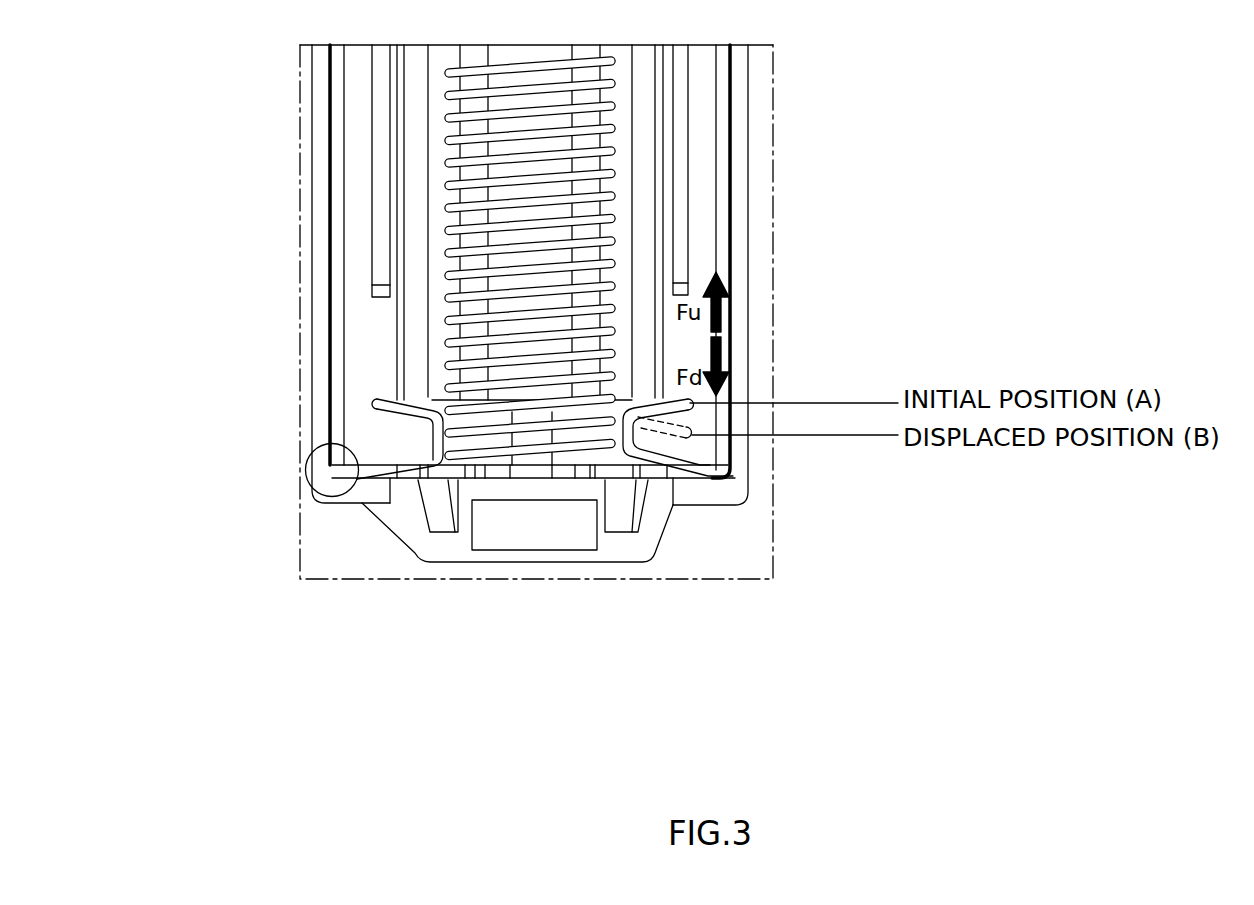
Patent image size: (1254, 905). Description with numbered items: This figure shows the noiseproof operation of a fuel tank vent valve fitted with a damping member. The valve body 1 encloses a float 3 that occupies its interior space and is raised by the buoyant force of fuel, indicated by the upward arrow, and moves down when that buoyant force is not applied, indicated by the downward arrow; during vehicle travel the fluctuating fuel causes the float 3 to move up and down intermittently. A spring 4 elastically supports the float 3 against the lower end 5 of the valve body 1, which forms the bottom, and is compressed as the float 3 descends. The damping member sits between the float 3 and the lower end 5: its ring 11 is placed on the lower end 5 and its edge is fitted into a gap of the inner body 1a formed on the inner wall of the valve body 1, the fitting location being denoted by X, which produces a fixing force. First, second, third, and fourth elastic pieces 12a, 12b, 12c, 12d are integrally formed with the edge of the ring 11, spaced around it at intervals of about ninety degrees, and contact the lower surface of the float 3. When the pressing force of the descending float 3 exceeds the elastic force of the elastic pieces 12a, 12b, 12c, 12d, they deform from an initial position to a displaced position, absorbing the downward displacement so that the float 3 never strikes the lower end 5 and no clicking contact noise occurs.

The valve body 1 is at (323, 258).
The inner body 1a is at (340, 342).
The float 3 is at (647, 230).
The spring 4 is at (617, 148).
The lower end 5 is at (532, 488).
The ring 11 is at (390, 465).
The first elastic piece 12a is at (720, 531).
The second elastic piece 12b is at (720, 531).
The third elastic piece 12c is at (720, 531).
The fourth elastic piece 12d is at (672, 405).
The fitting location X is at (307, 457).